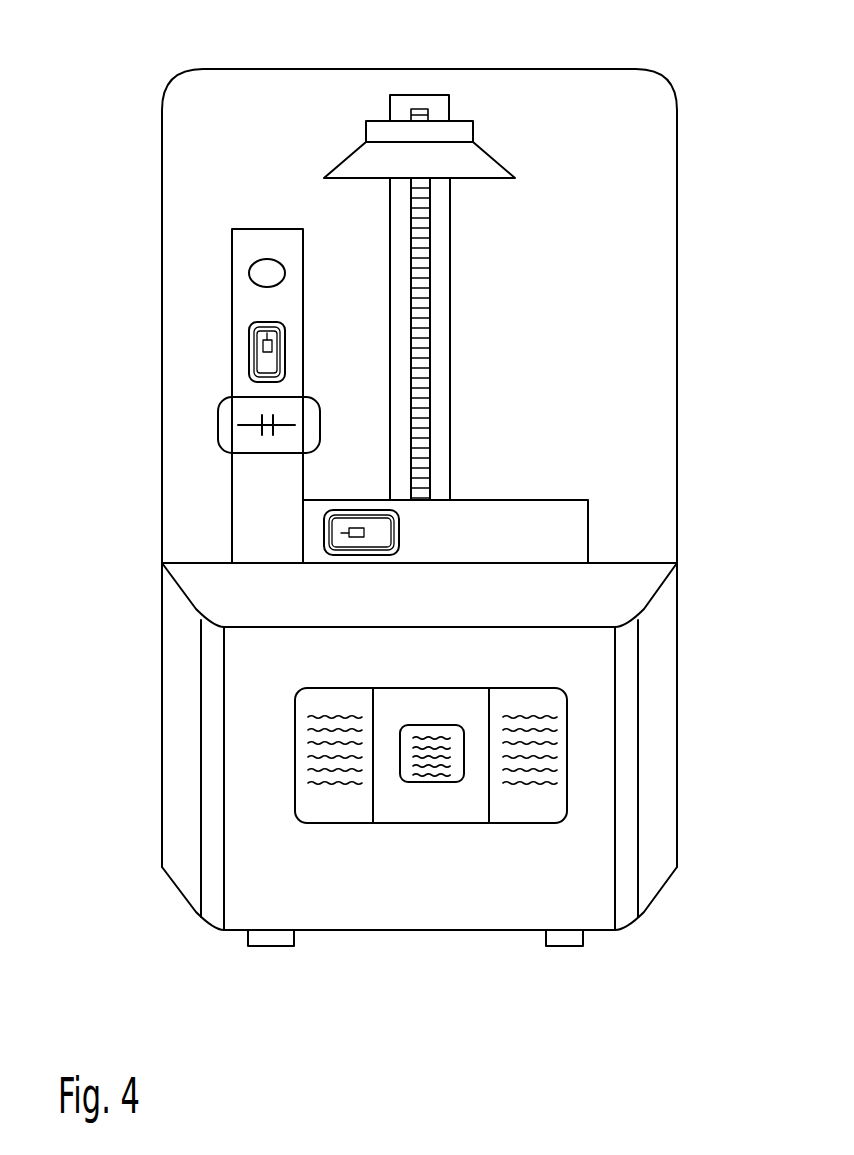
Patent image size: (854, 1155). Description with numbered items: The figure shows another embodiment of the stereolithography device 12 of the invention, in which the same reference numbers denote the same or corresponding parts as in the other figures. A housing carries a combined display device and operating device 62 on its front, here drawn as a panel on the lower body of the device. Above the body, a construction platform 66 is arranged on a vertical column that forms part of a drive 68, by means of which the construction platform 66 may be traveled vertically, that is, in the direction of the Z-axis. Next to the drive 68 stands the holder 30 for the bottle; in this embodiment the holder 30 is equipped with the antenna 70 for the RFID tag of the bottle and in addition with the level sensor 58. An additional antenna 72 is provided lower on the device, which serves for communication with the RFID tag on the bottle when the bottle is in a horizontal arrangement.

The stereolithography device 12 is at (157, 915).
The holder 30 is at (240, 247).
The level sensor 58 is at (221, 425).
The combined display device and operating device 62 is at (423, 800).
The construction platform 66 is at (452, 160).
The drive 68 is at (418, 328).
The antenna 70 is at (257, 357).
The additional antenna 72 is at (378, 535).